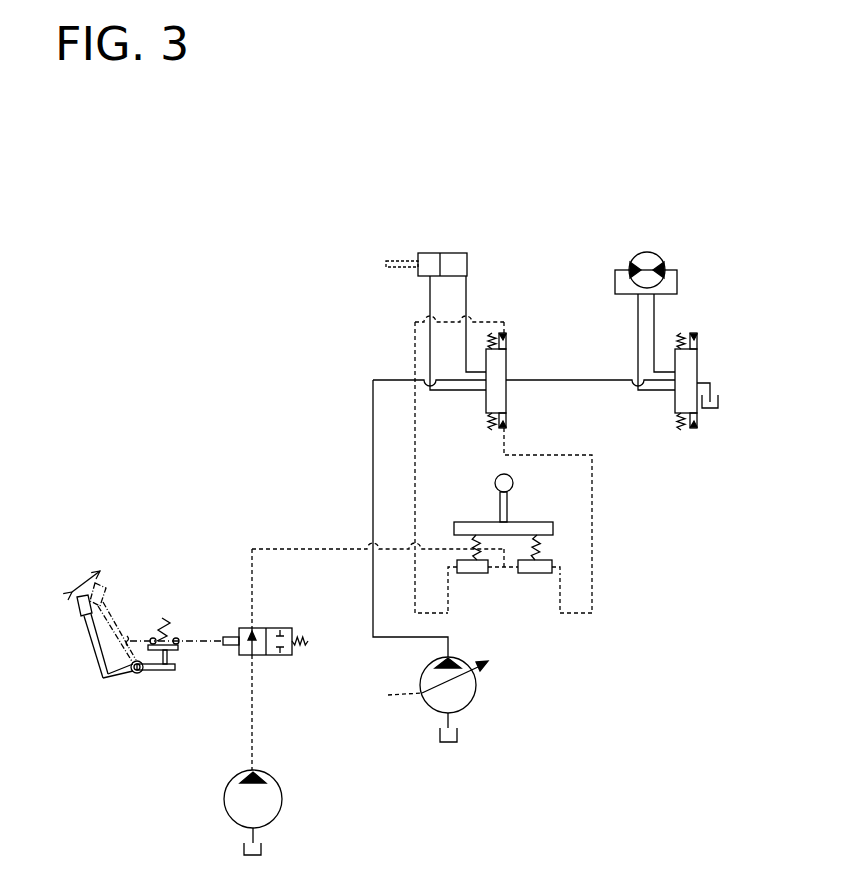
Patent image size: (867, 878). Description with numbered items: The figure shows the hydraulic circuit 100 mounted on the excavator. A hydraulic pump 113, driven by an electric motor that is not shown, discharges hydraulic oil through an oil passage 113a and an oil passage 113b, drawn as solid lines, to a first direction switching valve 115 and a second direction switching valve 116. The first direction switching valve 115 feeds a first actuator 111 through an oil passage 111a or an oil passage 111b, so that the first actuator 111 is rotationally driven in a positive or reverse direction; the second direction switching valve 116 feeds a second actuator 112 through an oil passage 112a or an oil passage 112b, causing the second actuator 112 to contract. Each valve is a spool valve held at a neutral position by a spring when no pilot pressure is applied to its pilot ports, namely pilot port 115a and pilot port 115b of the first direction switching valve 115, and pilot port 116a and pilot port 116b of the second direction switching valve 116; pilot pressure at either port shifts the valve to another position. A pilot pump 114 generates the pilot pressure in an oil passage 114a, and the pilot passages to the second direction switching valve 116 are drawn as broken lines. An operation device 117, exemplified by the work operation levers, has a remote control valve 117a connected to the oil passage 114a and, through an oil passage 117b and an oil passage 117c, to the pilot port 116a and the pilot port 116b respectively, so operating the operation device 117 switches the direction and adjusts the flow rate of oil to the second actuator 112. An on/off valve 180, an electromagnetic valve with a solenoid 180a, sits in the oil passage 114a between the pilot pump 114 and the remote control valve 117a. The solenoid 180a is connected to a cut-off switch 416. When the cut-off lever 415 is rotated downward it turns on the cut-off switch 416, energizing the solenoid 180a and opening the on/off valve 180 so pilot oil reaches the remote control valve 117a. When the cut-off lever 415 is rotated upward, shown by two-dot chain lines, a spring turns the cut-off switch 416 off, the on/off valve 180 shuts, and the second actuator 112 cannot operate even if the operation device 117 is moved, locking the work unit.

The hydraulic circuit 100 is at (237, 258).
The first actuator 111 is at (633, 250).
The oil passage 111a is at (680, 280).
The oil passage 111b is at (615, 280).
The second actuator 112 is at (437, 245).
The oil passage 112a is at (465, 306).
The oil passage 112b is at (428, 306).
The hydraulic pump 113 is at (480, 688).
The oil passage 113a is at (373, 572).
The oil passage 113b is at (560, 382).
The pilot pump 114 is at (287, 800).
The oil passage 114a is at (250, 764).
The first direction switching valve 115 is at (702, 363).
The pilot port 115a is at (697, 338).
The pilot port 115b is at (691, 430).
The second direction switching valve 116 is at (510, 364).
The pilot port 116a is at (507, 337).
The pilot port 116b is at (499, 432).
The operation device 117 is at (490, 512).
The remote control valve 117a is at (502, 580).
The oil passage 117b is at (449, 598).
The oil passage 117c is at (569, 613).
The on/off valve 180 is at (247, 625).
The solenoid 180a is at (232, 650).
The cut-off lever 415 is at (85, 640).
The cut-off switch 416 is at (157, 633).